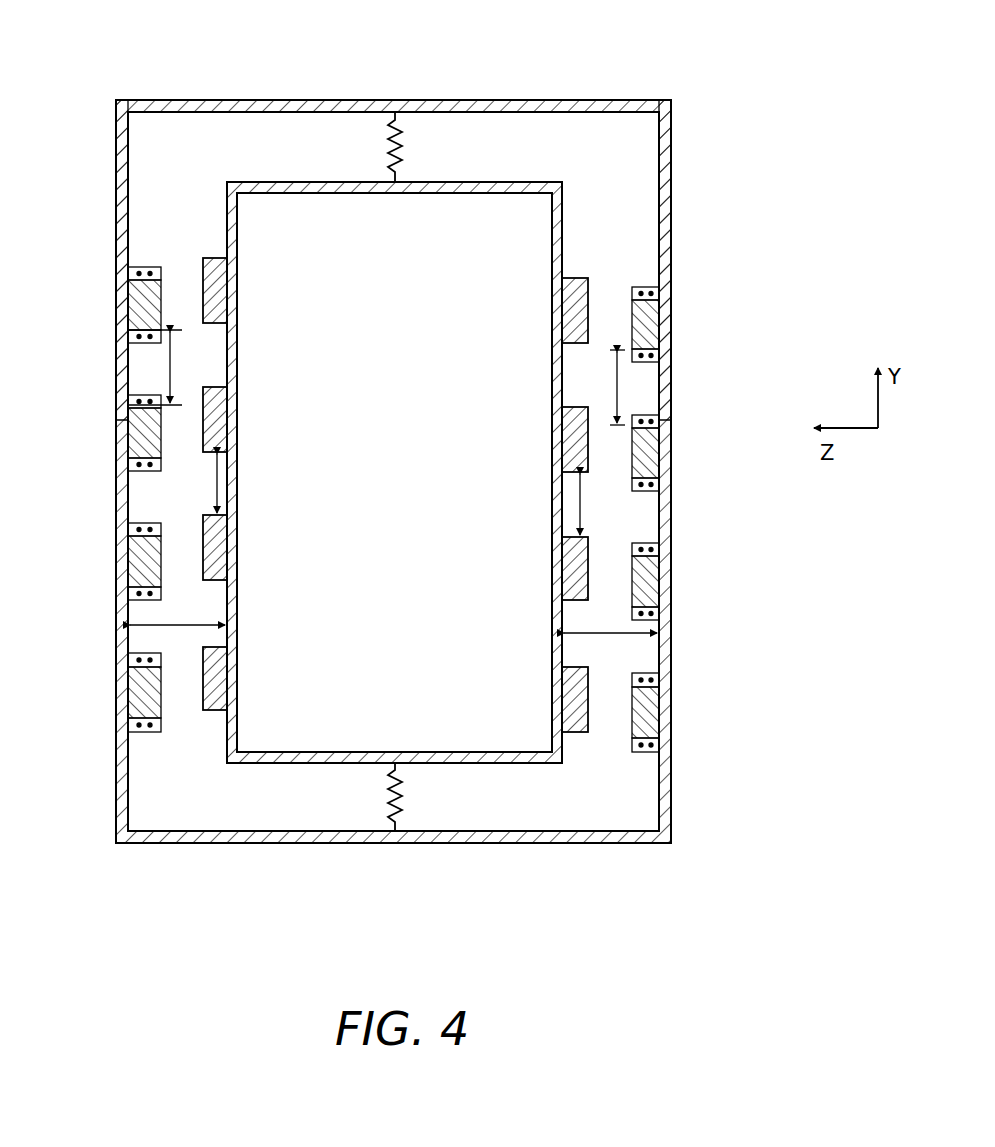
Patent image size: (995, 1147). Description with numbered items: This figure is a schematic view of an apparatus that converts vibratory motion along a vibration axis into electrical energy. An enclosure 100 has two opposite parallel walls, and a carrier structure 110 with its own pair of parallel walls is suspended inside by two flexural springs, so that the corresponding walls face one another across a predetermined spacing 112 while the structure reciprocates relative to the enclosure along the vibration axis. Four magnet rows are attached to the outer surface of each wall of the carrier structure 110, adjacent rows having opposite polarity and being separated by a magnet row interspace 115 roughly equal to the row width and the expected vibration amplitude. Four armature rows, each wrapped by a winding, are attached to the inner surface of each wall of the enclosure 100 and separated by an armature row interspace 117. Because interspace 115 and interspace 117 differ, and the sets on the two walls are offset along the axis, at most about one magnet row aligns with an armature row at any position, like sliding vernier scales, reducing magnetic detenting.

The enclosure 100 is at (534, 60).
The carrier structure 110 is at (420, 420).
The predetermined spacing 112 is at (178, 624).
The magnet row interspace 115 is at (215, 490).
The armature row interspace 117 is at (172, 380).